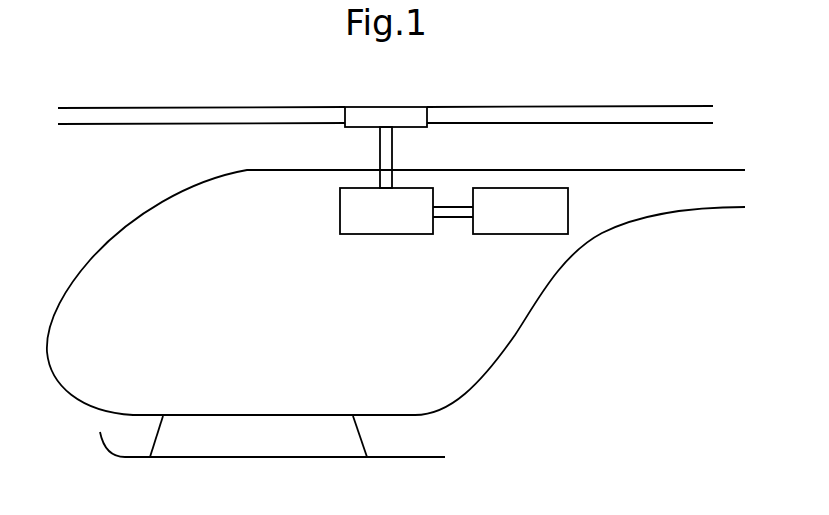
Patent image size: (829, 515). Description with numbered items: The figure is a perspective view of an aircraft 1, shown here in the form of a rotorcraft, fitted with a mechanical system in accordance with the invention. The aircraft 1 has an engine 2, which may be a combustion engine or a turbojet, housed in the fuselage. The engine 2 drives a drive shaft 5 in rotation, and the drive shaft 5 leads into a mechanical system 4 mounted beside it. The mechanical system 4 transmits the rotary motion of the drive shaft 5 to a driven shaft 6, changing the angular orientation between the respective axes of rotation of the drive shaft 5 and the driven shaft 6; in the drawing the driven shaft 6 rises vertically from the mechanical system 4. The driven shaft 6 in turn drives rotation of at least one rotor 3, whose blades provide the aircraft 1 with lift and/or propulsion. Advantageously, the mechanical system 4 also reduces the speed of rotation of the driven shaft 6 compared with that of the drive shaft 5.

The aircraft 1 is at (522, 367).
The engine 2 is at (555, 210).
The rotor 3 is at (432, 88).
The mechanical system 4 is at (352, 212).
The drive shaft 5 is at (455, 217).
The driven shaft 6 is at (392, 182).